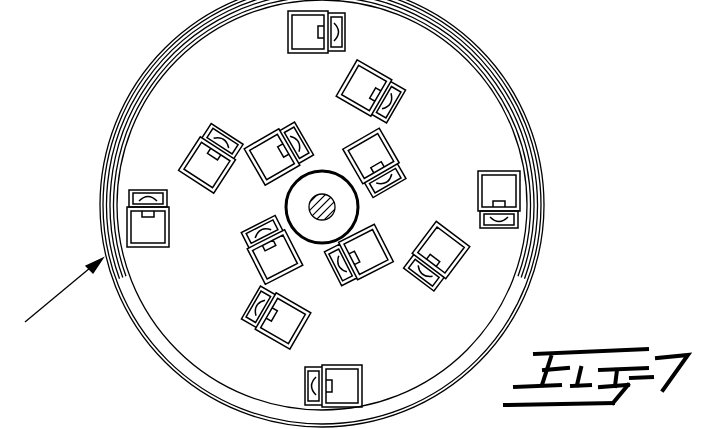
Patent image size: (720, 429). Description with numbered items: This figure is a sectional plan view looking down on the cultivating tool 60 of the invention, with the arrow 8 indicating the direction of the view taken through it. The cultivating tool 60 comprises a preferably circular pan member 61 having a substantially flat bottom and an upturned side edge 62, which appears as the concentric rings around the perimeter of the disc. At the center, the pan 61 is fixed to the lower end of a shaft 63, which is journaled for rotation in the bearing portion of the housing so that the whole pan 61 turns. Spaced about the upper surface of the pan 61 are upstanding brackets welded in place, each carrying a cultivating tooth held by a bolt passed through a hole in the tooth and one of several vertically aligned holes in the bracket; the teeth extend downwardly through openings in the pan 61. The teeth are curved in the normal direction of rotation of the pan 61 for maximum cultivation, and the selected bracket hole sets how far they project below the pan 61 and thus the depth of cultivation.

The view direction of FIG. 8 is at (60, 290).
The cultivating tool 60 is at (507, 72).
The pan member 61 is at (480, 112).
The upturned side edge 62 is at (514, 134).
The shaft 63 is at (335, 208).